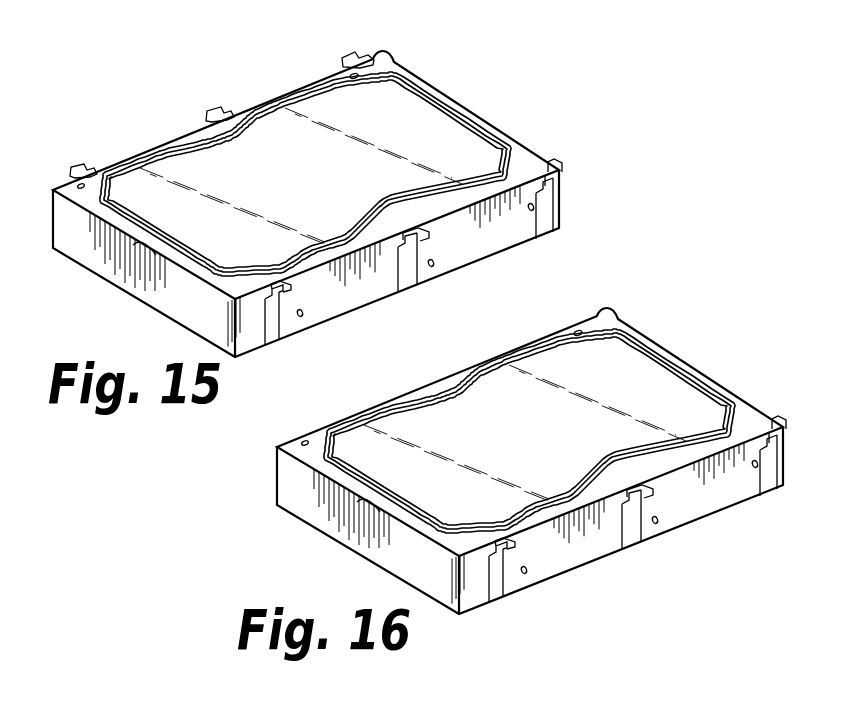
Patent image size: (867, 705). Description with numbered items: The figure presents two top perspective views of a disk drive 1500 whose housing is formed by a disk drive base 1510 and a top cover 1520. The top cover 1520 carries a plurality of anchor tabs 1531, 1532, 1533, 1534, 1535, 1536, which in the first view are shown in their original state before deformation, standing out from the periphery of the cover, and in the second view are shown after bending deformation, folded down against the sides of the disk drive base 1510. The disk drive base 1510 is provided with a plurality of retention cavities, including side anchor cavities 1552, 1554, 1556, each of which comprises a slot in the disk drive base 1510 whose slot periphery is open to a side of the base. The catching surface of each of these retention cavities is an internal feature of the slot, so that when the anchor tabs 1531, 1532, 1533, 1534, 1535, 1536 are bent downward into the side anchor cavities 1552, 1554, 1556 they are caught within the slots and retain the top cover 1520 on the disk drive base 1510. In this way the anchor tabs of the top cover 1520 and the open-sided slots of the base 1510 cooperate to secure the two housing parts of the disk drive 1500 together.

In FIG. 15, the disk drive 1500 is at (495, 79).
In FIG. 16, the disk drive 1500 is at (570, 489).
In FIG. 15, the disk drive base 1510 is at (130, 292).
In FIG. 16, the disk drive base 1510 is at (530, 461).
In FIG. 15, the top cover 1520 is at (464, 148).
In FIG. 16, the top cover 1520 is at (555, 431).
In FIG. 15, the anchor tab 1531 is at (350, 55).
In FIG. 15, the anchor tab 1532 is at (558, 178).
In FIG. 16, the anchor tab 1532 is at (816, 485).
In FIG. 15, the anchor tab 1533 is at (218, 108).
In FIG. 15, the anchor tab 1534 is at (428, 236).
In FIG. 16, the anchor tab 1534 is at (677, 546).
In FIG. 15, the anchor tab 1535 is at (75, 163).
In FIG. 15, the anchor tab 1536 is at (292, 290).
In FIG. 16, the anchor tab 1536 is at (543, 604).
In FIG. 15, the side anchor cavity 1552 is at (540, 213).
In FIG. 16, the side anchor cavity 1552 is at (776, 485).
In FIG. 15, the side anchor cavity 1554 is at (405, 266).
In FIG. 16, the side anchor cavity 1554 is at (646, 537).
In FIG. 15, the side anchor cavity 1556 is at (270, 332).
In FIG. 16, the side anchor cavity 1556 is at (508, 593).